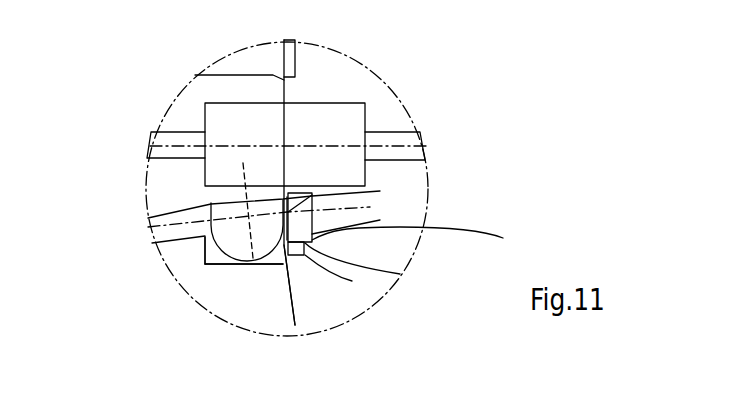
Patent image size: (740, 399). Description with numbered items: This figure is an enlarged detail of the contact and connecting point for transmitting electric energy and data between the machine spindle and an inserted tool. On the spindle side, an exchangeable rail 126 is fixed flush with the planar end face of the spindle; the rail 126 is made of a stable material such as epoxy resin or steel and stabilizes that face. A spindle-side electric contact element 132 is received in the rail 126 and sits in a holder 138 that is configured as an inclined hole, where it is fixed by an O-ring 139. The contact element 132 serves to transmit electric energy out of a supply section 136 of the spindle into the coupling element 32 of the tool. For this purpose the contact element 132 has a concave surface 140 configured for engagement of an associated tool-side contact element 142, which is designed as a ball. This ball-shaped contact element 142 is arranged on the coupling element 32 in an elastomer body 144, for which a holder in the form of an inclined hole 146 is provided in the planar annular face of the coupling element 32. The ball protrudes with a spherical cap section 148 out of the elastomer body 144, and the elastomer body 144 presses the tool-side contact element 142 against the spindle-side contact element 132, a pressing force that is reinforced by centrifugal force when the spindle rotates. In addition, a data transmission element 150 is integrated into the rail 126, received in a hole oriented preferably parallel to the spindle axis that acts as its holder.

The coupling element 32 is at (250, 300).
The exchangeable rail 126 is at (320, 266).
The spindle-side electric contact element 132 is at (422, 239).
The supply section 136 is at (370, 207).
The holder 138 is at (400, 274).
The O-ring 139 is at (283, 264).
The concave surface 140 is at (257, 265).
The tool-side contact element 142 is at (260, 254).
The elastomer body 144 is at (330, 103).
The inclined hole 146 is at (217, 264).
The spherical cap section 148 is at (313, 193).
The data transmission element 150 is at (353, 127).